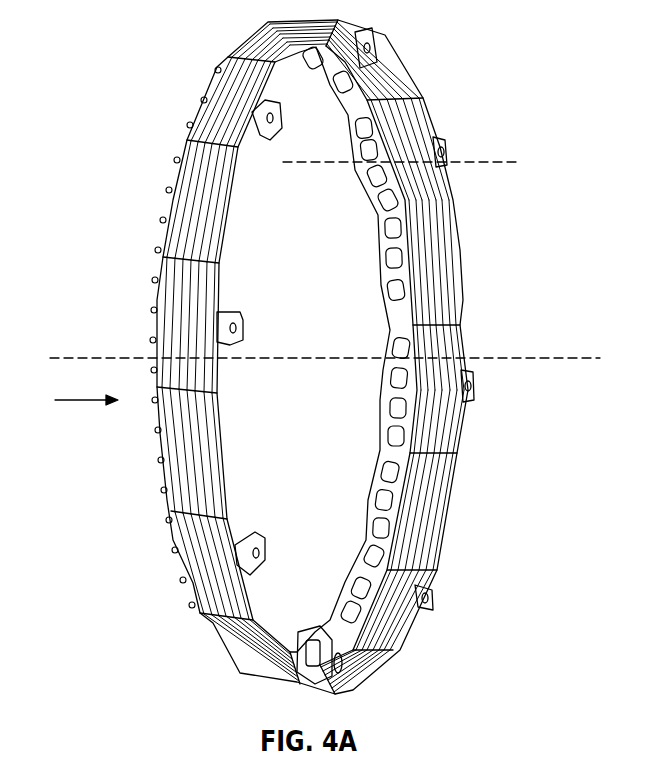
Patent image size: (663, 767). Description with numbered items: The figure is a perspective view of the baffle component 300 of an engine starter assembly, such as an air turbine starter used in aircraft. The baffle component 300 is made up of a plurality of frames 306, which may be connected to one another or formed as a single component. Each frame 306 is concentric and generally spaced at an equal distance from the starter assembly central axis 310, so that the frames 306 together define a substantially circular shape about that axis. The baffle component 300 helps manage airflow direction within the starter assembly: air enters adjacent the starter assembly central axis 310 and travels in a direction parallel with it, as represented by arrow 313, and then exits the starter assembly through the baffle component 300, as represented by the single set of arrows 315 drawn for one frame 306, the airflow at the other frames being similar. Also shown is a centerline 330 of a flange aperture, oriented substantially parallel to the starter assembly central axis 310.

The baffle component 300 is at (382, 349).
The frame 306 is at (417, 86).
The starter assembly central axis 310 is at (73, 358).
The arrow 313 is at (77, 400).
The arrows 315 is at (454, 397).
The centerline 330 is at (500, 163).